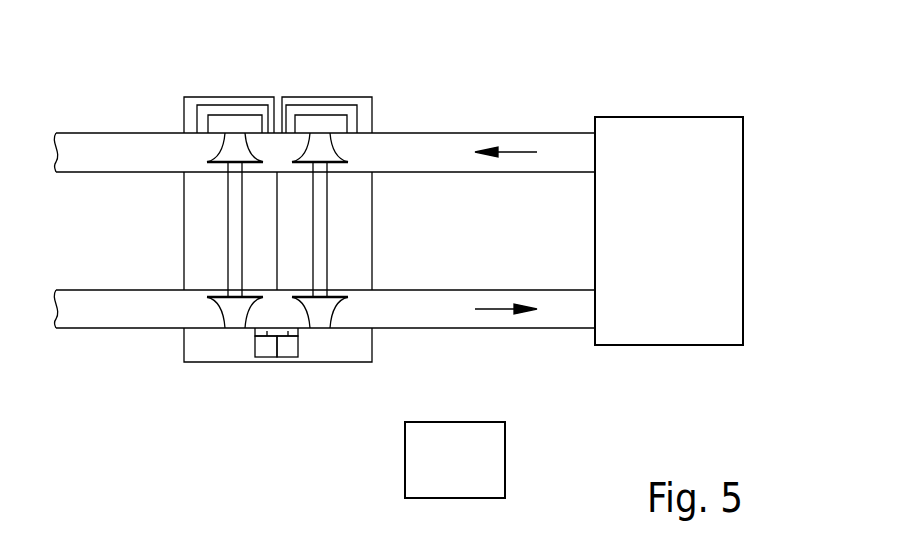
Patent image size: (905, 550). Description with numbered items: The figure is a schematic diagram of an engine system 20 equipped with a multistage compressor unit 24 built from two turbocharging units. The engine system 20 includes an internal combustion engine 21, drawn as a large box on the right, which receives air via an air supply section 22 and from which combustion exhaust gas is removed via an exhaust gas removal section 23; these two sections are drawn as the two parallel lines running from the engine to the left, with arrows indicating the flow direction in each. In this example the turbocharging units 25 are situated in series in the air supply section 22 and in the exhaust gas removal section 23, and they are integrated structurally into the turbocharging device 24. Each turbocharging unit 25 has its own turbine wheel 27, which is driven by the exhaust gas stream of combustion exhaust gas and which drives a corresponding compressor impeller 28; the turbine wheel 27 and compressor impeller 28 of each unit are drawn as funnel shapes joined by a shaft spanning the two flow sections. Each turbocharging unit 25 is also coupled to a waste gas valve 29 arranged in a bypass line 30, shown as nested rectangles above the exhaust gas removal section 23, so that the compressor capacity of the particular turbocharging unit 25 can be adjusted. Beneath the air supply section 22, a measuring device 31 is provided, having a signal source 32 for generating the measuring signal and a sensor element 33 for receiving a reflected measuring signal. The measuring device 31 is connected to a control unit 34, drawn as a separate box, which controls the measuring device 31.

The engine system 20 is at (437, 230).
The internal combustion engine 21 is at (674, 338).
The air supply section 22 is at (517, 320).
The exhaust gas removal section 23 is at (519, 140).
The multistage compressor unit 24 is at (347, 357).
The turbocharging unit 25 is at (210, 98).
The turbine wheel 27 is at (219, 168).
The compressor impeller 28 is at (219, 300).
The waste gas valve 29 is at (236, 110).
The bypass line 30 is at (253, 98).
The measuring device 31 is at (274, 363).
The signal source 32 is at (267, 354).
The sensor element 33 is at (287, 354).
The control unit 34 is at (495, 462).